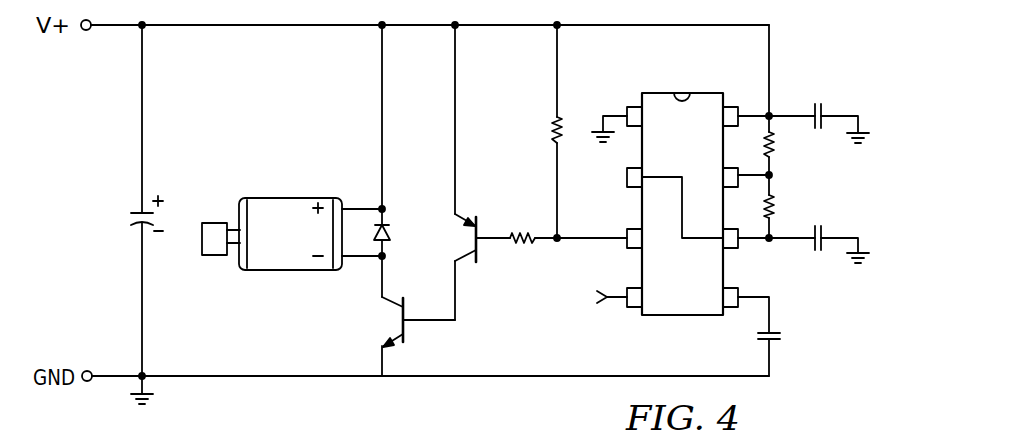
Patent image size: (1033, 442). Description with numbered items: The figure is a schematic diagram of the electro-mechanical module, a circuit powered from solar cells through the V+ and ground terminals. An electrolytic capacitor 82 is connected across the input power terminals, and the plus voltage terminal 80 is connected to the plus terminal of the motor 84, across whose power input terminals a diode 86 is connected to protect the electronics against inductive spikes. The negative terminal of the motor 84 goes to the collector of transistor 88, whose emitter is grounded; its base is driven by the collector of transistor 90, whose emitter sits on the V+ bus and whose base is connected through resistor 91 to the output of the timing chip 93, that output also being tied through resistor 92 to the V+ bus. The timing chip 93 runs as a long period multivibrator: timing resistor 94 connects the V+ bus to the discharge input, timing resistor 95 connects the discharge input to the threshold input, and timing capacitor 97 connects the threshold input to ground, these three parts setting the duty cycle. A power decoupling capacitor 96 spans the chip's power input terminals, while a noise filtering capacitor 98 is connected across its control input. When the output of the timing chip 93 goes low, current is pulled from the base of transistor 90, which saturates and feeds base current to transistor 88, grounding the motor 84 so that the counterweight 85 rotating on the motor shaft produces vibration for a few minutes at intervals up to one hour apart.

The plus voltage terminal 80 is at (89, 31).
The electrolytic capacitor 82 is at (128, 215).
The motor 84 is at (295, 197).
The counterweight 85 is at (208, 222).
The diode 86 is at (391, 236).
The transistor 88 is at (408, 338).
The transistor 90 is at (480, 252).
The resistor 91 is at (518, 233).
The resistor 92 is at (553, 128).
The timing chip 93 is at (682, 85).
The timing resistor 94 is at (776, 146).
The timing resistor 95 is at (776, 196).
The power decoupling capacitor 96 is at (818, 100).
The timing capacitor 97 is at (818, 256).
The noise filtering capacitor 98 is at (787, 338).